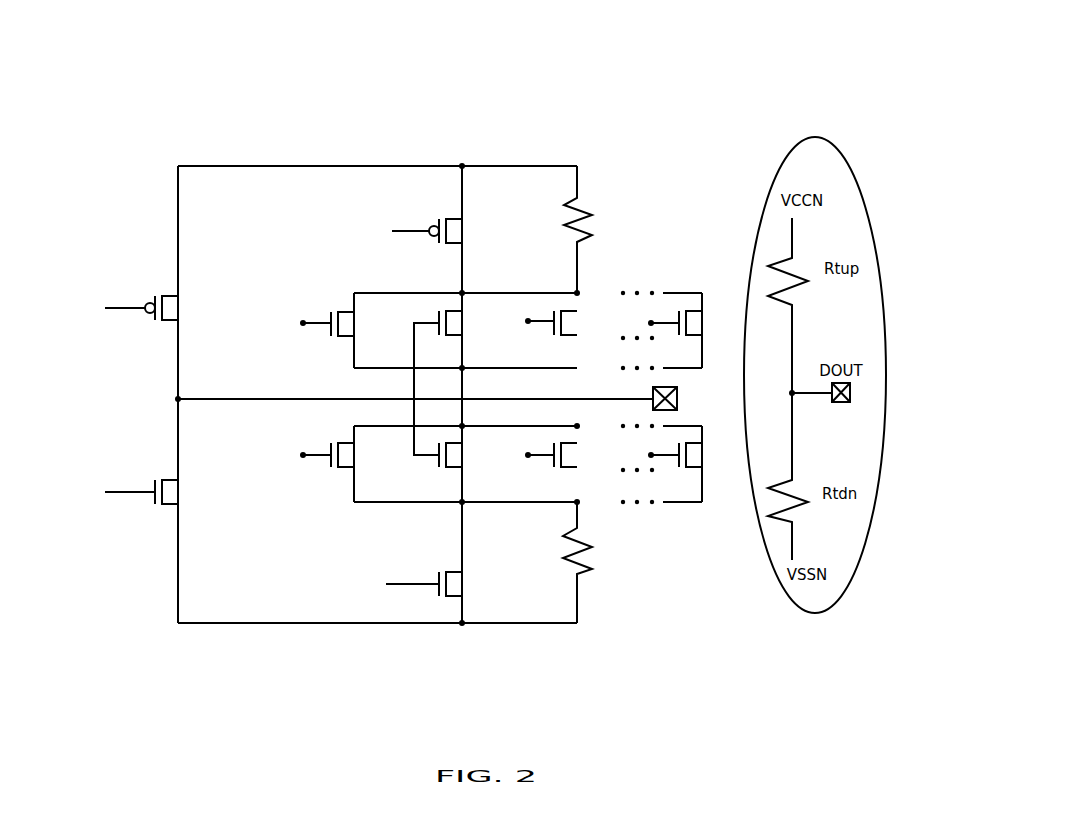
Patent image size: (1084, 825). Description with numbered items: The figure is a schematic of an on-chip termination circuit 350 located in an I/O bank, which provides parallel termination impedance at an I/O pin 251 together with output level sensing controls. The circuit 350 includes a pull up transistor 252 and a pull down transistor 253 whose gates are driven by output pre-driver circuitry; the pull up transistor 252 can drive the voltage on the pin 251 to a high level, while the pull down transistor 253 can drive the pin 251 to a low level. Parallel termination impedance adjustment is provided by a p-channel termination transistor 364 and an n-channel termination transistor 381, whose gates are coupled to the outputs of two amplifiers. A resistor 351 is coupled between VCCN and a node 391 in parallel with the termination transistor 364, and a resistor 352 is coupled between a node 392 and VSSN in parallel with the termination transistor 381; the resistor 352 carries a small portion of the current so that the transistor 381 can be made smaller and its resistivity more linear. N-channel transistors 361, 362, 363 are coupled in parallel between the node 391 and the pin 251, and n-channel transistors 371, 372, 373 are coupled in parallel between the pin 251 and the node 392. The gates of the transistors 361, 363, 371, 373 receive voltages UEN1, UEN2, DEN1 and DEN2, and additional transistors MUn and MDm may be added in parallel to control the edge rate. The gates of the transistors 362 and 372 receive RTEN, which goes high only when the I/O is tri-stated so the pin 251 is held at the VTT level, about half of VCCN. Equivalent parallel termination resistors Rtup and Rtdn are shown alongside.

The on-chip termination circuit 350 is at (578, 81).
The resistor 351 is at (584, 210).
The resistor 352 is at (580, 570).
The n-channel transistor 361 is at (330, 319).
The n-channel transistor 362 is at (438, 330).
The n-channel transistor 363 is at (553, 331).
The termination transistor 364 is at (437, 222).
The n-channel transistor 371 is at (330, 449).
The n-channel transistor 372 is at (438, 462).
The n-channel transistor 373 is at (553, 463).
The termination transistor 381 is at (438, 590).
The node 391 is at (577, 292).
The node 392 is at (577, 504).
The I/O pin 251 is at (677, 405).
The pull up transistor 252 is at (152, 302).
The pull down transistor 253 is at (153, 487).